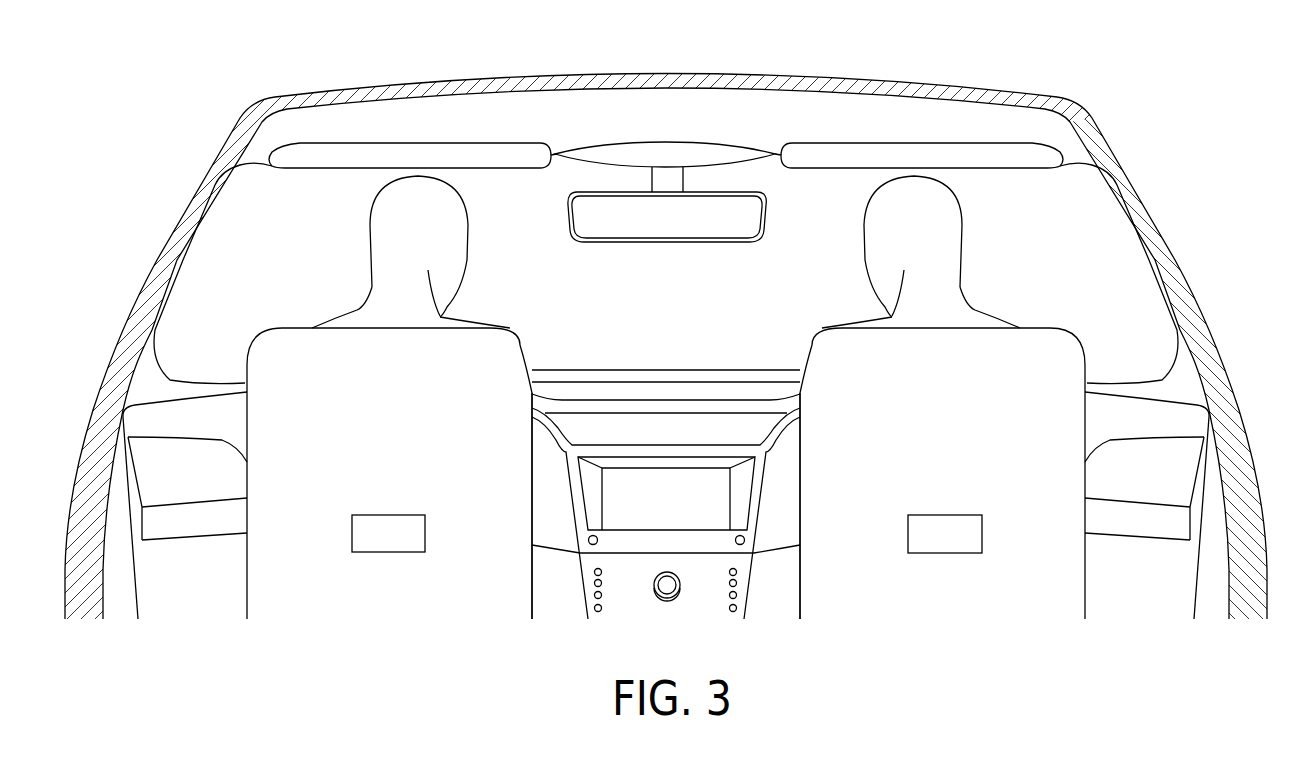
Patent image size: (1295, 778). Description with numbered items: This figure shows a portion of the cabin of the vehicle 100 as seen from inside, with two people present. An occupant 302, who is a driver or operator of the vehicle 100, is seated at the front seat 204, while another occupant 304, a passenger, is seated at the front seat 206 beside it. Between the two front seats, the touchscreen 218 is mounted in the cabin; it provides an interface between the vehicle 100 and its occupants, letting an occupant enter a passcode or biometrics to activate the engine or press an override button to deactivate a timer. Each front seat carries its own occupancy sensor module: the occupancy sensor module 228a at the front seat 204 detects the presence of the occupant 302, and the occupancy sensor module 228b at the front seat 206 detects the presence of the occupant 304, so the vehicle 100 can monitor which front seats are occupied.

The vehicle 100 is at (1050, 46).
The front seat 204 is at (408, 441).
The front seat 206 is at (964, 441).
The touchscreen 218 is at (687, 507).
The occupancy sensor module 228a is at (416, 548).
The occupancy sensor module 228b is at (972, 548).
The occupant 302 is at (368, 238).
The occupant 304 is at (964, 238).